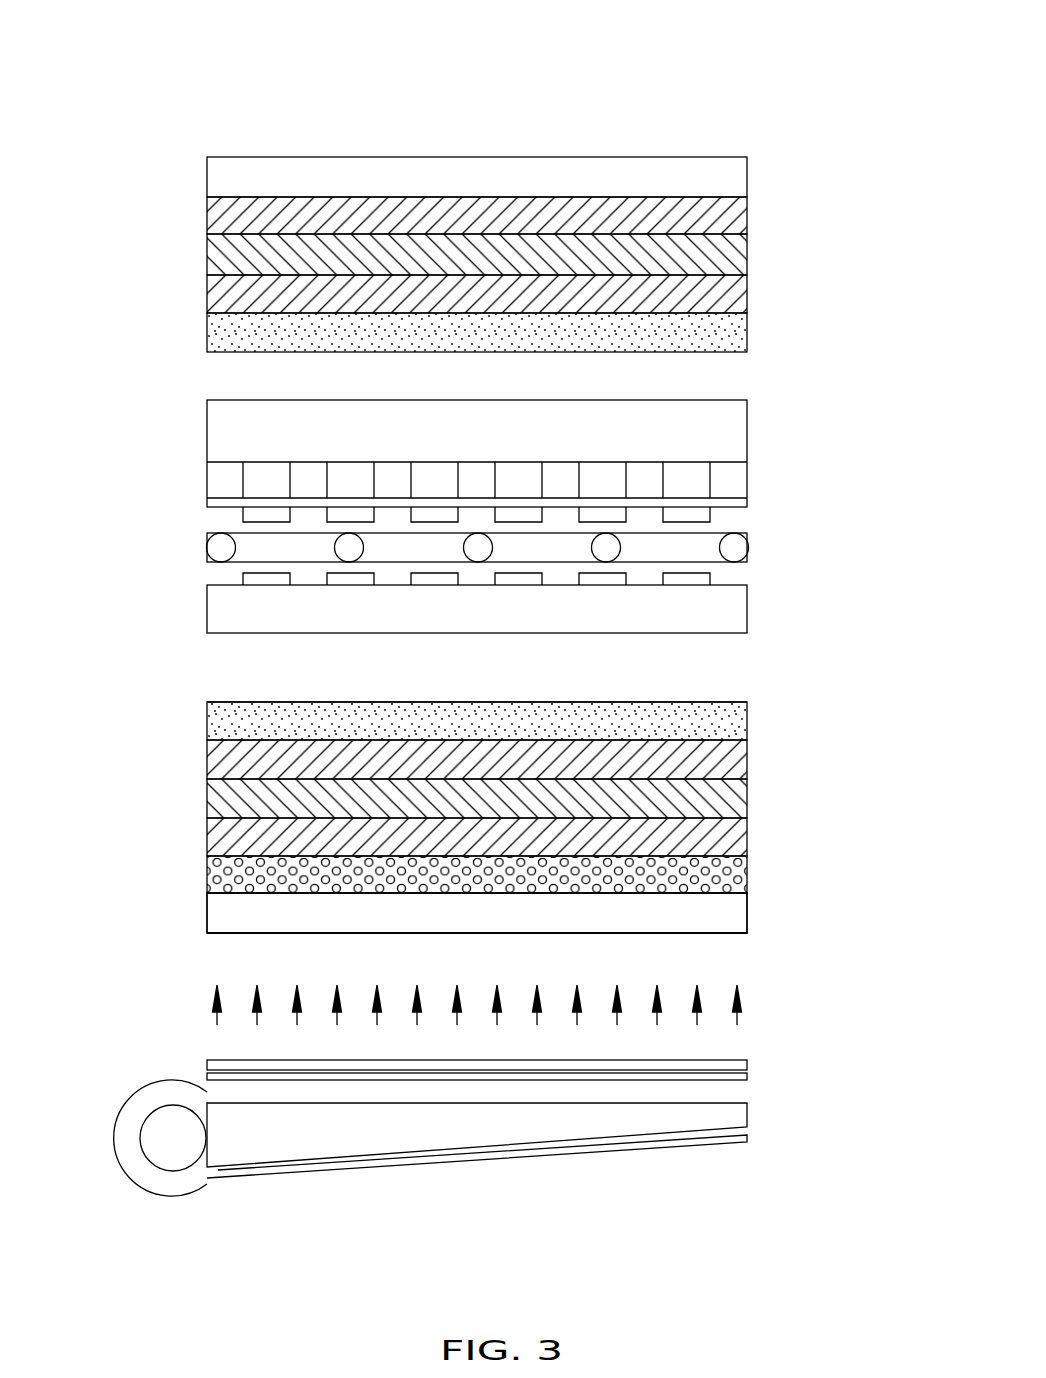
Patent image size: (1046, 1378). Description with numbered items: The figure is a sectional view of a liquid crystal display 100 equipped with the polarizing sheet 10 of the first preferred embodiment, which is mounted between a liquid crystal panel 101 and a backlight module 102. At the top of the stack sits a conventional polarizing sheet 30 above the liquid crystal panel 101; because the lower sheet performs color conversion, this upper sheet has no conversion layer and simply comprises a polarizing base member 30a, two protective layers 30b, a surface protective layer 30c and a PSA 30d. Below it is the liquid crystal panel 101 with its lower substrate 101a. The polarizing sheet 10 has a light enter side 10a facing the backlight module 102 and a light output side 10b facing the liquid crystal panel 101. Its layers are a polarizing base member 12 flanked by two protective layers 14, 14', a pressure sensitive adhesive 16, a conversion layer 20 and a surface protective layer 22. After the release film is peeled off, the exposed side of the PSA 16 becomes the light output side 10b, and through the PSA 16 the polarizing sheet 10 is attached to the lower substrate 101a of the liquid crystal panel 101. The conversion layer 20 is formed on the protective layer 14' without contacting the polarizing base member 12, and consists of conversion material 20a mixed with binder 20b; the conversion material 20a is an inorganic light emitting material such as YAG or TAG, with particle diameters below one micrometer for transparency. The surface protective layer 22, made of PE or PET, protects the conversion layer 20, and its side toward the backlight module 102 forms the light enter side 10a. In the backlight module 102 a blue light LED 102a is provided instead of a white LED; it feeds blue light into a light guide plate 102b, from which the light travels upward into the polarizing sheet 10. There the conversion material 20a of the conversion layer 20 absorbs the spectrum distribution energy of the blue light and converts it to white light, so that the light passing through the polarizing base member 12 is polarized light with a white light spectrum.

The liquid crystal display 100 is at (235, 97).
The polarizing sheet 30 is at (180, 195).
The polarizing base member 30a is at (738, 256).
The protective layers 30b is at (735, 213).
The surface protective layer 30c is at (738, 177).
The PSA 30d is at (735, 330).
The liquid crystal panel 101 is at (528, 530).
The lower substrate 101a is at (520, 623).
The polarizing sheet 10 is at (190, 755).
The light enter side 10a is at (250, 933).
The light output side 10b is at (245, 700).
The pressure sensitive adhesive 16 is at (738, 716).
The protective layer 14 is at (524, 753).
The polarizing base member 12 is at (735, 805).
The protective layer 14' is at (527, 834).
The conversion layer 20 is at (552, 892).
The conversion material 20a is at (735, 873).
The binder 20b is at (727, 895).
The surface protective layer 22 is at (730, 918).
The backlight module 102 is at (451, 1163).
The blue light LED 102a is at (153, 1127).
The light guide plate 102b is at (293, 1143).